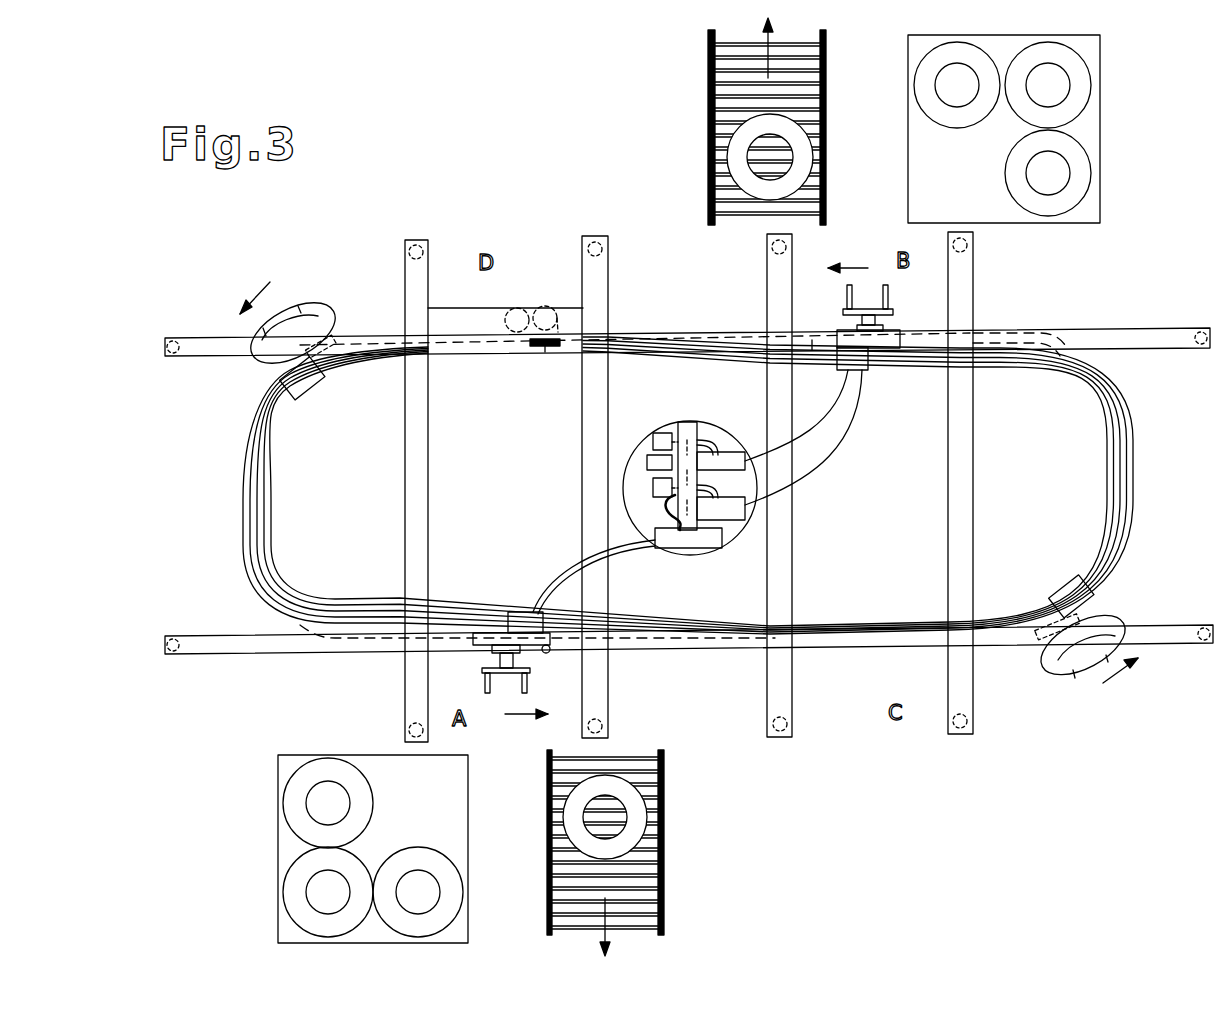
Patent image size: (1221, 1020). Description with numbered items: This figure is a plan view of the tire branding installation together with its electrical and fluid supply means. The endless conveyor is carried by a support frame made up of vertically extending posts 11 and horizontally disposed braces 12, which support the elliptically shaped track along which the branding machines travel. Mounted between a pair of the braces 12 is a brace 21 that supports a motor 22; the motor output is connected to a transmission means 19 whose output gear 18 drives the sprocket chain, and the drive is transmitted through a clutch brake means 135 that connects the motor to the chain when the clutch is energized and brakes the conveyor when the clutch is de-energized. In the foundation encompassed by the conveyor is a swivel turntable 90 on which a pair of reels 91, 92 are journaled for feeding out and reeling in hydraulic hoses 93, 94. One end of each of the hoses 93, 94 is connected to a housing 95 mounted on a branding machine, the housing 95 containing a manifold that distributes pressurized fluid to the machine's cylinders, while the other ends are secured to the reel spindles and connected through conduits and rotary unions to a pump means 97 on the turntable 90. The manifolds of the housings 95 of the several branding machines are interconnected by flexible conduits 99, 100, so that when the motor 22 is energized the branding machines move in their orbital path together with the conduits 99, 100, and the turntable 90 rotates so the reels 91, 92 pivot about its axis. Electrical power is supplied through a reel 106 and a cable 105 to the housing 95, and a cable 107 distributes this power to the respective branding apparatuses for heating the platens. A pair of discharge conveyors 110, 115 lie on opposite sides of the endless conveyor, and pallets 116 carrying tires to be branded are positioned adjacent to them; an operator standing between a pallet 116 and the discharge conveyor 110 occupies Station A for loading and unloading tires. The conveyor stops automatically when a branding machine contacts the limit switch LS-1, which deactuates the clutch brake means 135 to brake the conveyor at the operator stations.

The vertically extending posts 11 is at (582, 245).
The horizontally disposed braces 12 is at (607, 270).
The output gear 18 is at (545, 352).
The transmission means 19 is at (566, 310).
The brace 21 is at (430, 322).
The motor 22 is at (500, 304).
The swivel turntable 90 is at (688, 482).
The reel 91 is at (738, 520).
The reel 92 is at (735, 452).
The hydraulic hose 93 is at (850, 402).
The hydraulic hose 94 is at (842, 380).
The housing 95 is at (310, 395).
The pump means 97 is at (648, 460).
The flexible conduit 99 is at (327, 380).
The flexible conduit 100 is at (335, 370).
The cable 105 is at (565, 580).
The reel 106 is at (676, 548).
The cable 107 is at (343, 612).
The discharge conveyor 110 is at (662, 844).
The discharge conveyor 115 is at (710, 78).
The pallets 116 is at (1100, 126).
The clutch brake means 135 is at (533, 346).
The limit switch LS-1 is at (547, 653).